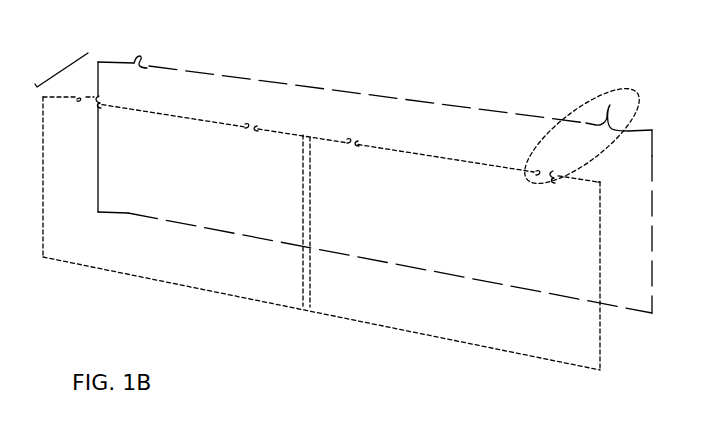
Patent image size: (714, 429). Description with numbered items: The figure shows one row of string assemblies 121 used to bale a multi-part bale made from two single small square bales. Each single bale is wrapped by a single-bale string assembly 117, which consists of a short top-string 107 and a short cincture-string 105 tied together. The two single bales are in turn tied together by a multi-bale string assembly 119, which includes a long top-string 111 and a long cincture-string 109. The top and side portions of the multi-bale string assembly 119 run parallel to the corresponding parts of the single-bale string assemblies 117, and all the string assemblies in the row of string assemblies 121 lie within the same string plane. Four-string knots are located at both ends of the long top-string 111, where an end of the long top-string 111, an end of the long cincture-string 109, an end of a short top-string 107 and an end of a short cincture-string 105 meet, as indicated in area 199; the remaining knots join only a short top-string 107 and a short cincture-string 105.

The short cincture-string 105 is at (321, 329).
The short top-string 107 is at (320, 151).
The long cincture-string 109 is at (674, 221).
The long top-string 111 is at (375, 92).
The single-bale string assembly 117 is at (347, 242).
The multi-bale string assembly 119 is at (400, 266).
The row of string assemblies 121 is at (62, 120).
The area 199 is at (581, 128).